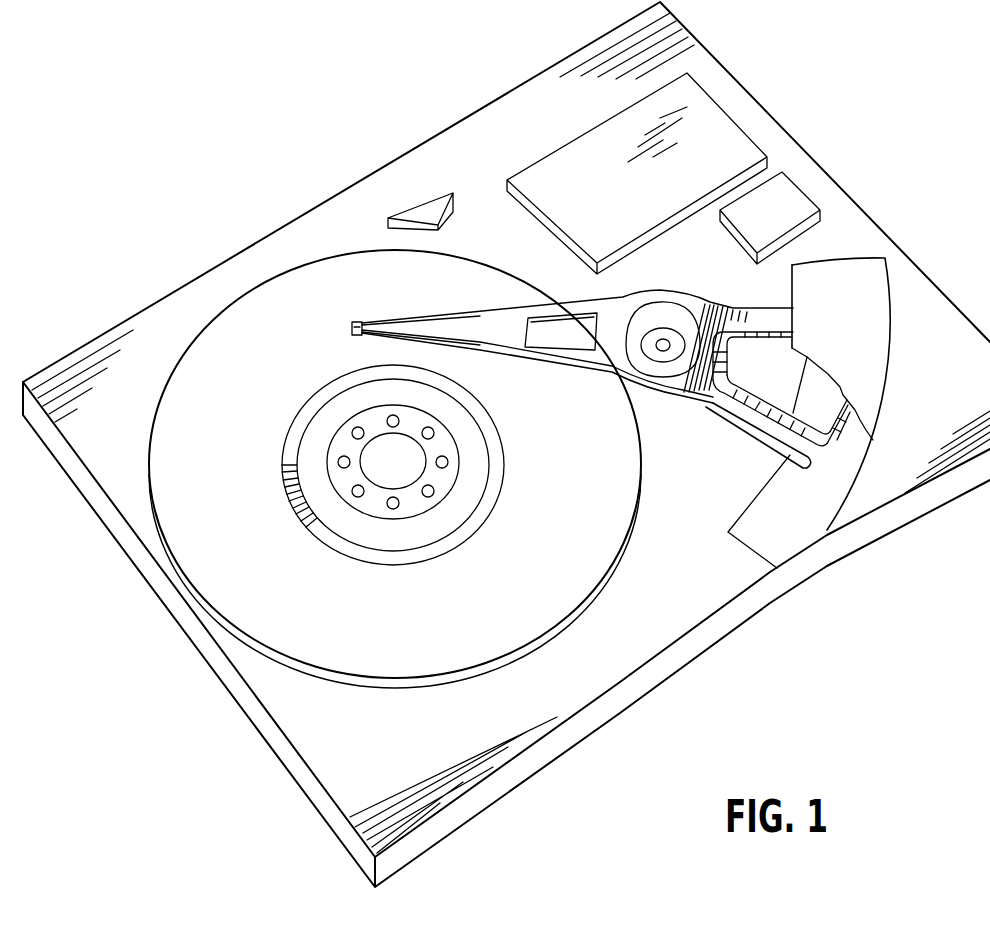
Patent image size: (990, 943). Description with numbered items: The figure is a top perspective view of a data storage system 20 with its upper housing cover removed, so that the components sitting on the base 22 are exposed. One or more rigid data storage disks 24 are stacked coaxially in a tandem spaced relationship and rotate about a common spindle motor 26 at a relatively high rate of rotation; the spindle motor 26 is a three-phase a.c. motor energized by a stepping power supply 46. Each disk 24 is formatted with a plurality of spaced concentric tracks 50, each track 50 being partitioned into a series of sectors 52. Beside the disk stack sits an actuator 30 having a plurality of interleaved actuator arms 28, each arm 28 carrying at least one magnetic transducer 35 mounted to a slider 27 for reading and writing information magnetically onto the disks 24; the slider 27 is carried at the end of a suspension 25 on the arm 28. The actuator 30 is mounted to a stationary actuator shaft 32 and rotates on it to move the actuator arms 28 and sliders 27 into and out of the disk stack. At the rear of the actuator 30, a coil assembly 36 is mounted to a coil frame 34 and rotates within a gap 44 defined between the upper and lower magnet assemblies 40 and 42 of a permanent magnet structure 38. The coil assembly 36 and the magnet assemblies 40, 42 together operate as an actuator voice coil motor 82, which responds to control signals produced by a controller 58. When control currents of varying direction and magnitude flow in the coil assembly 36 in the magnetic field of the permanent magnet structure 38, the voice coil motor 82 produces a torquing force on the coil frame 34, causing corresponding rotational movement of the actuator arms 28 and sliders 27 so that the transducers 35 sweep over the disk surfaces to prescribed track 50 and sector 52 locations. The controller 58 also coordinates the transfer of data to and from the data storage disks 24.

The data storage system 20 is at (506, 444).
The housing base 22 is at (693, 650).
The rigid data storage disk 24 is at (395, 469).
The suspension 25 is at (373, 332).
The spindle motor 26 is at (423, 510).
The slider 27 is at (353, 323).
The actuator arm 28 is at (545, 346).
The actuator 30 is at (680, 387).
The stationary actuator shaft 32 is at (665, 337).
The coil frame 34 is at (723, 307).
The magnetic transducer 35 is at (352, 337).
The coil assembly 36 is at (740, 350).
The permanent magnet structure 38 is at (873, 374).
The upper magnet assembly 40 is at (880, 337).
The lower magnet assembly 42 is at (754, 540).
The gap 44 is at (857, 430).
The stepping power supply 46 is at (637, 173).
The concentric track 50 is at (298, 417).
The sector 52 is at (287, 493).
The controller 58 is at (770, 218).
The actuator voice coil motor 82 is at (777, 457).